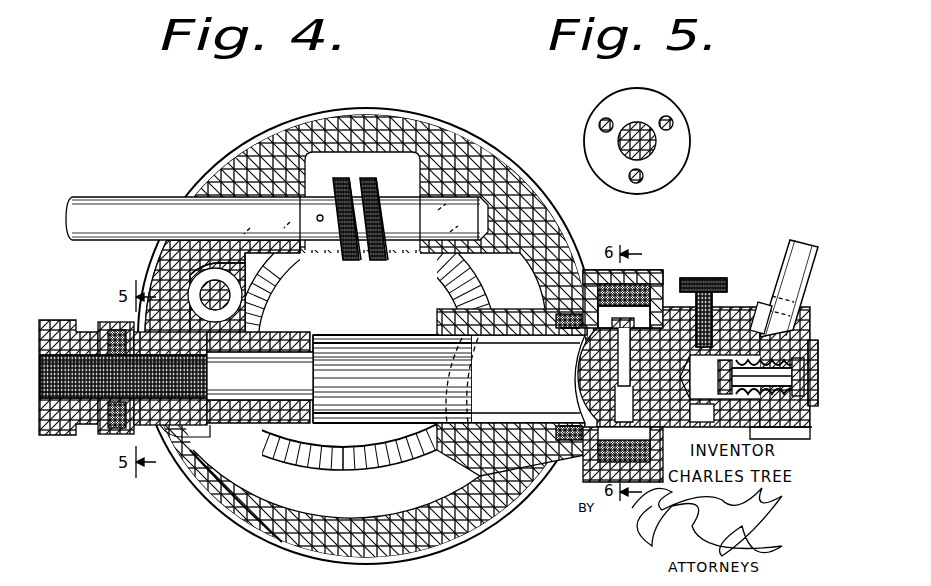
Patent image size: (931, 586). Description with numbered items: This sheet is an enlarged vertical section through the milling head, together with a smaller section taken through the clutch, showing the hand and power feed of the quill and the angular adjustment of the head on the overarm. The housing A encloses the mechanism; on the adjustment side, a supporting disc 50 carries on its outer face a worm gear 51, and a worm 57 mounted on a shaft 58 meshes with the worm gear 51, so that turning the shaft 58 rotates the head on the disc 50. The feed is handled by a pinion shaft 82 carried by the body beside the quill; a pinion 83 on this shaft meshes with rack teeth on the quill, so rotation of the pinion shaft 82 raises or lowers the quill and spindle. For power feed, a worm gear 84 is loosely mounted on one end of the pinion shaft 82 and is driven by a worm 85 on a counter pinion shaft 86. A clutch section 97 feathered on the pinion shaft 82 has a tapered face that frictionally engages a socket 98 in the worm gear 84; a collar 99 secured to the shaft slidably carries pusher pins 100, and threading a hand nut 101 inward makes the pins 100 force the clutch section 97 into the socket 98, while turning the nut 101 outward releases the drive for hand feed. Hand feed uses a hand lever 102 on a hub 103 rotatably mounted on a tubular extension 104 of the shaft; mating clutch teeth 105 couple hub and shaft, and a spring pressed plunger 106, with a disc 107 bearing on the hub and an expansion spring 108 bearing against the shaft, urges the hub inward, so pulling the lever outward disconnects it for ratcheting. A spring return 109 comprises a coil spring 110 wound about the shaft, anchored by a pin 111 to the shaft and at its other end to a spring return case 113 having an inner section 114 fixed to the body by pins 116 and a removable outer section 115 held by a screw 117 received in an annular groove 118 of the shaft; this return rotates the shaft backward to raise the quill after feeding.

In FIG. 4, the housing A is at (283, 118).
In FIG. 4, the supporting disc 50 is at (426, 287).
In FIG. 4, the worm gear 51 is at (480, 312).
In FIG. 4, the worm 57 is at (368, 177).
In FIG. 4, the shaft 58 is at (210, 205).
In FIG. 4, the pinion shaft 82 is at (489, 332).
In FIG. 5, the pinion shaft 82 is at (645, 130).
In FIG. 4, the pinion 83 is at (376, 332).
In FIG. 4, the worm gear 84 is at (250, 288).
In FIG. 4, the worm 85 is at (185, 281).
In FIG. 4, the counter pinion shaft 86 is at (236, 285).
In FIG. 4, the clutch section 97 is at (168, 425).
In FIG. 4, the socket 98 is at (202, 430).
In FIG. 4, the collar 99 is at (104, 434).
In FIG. 5, the collar 99 is at (650, 108).
In FIG. 4, the pusher pins 100 is at (118, 434).
In FIG. 5, the pusher pins 100 is at (670, 122).
In FIG. 4, the hand nut 101 is at (74, 320).
In FIG. 4, the hand lever 102 is at (794, 242).
In FIG. 4, the hub 103 is at (774, 427).
In FIG. 4, the tubular extension 104 is at (814, 428).
In FIG. 4, the clutch teeth 105 is at (756, 308).
In FIG. 4, the spring pressed plunger 106 is at (734, 380).
In FIG. 4, the disc 107 is at (804, 370).
In FIG. 4, the expansion spring 108 is at (712, 376).
In FIG. 4, the spring return 109 is at (637, 270).
In FIG. 4, the coil spring 110 is at (631, 294).
In FIG. 4, the pin 111 is at (631, 326).
In FIG. 4, the spring return case 113 is at (592, 268).
In FIG. 4, the inner section 114 is at (600, 264).
In FIG. 4, the removable outer section 115 is at (630, 280).
In FIG. 4, the pins 116 is at (580, 345).
In FIG. 4, the screw 117 is at (714, 278).
In FIG. 4, the annular groove 118 is at (708, 408).